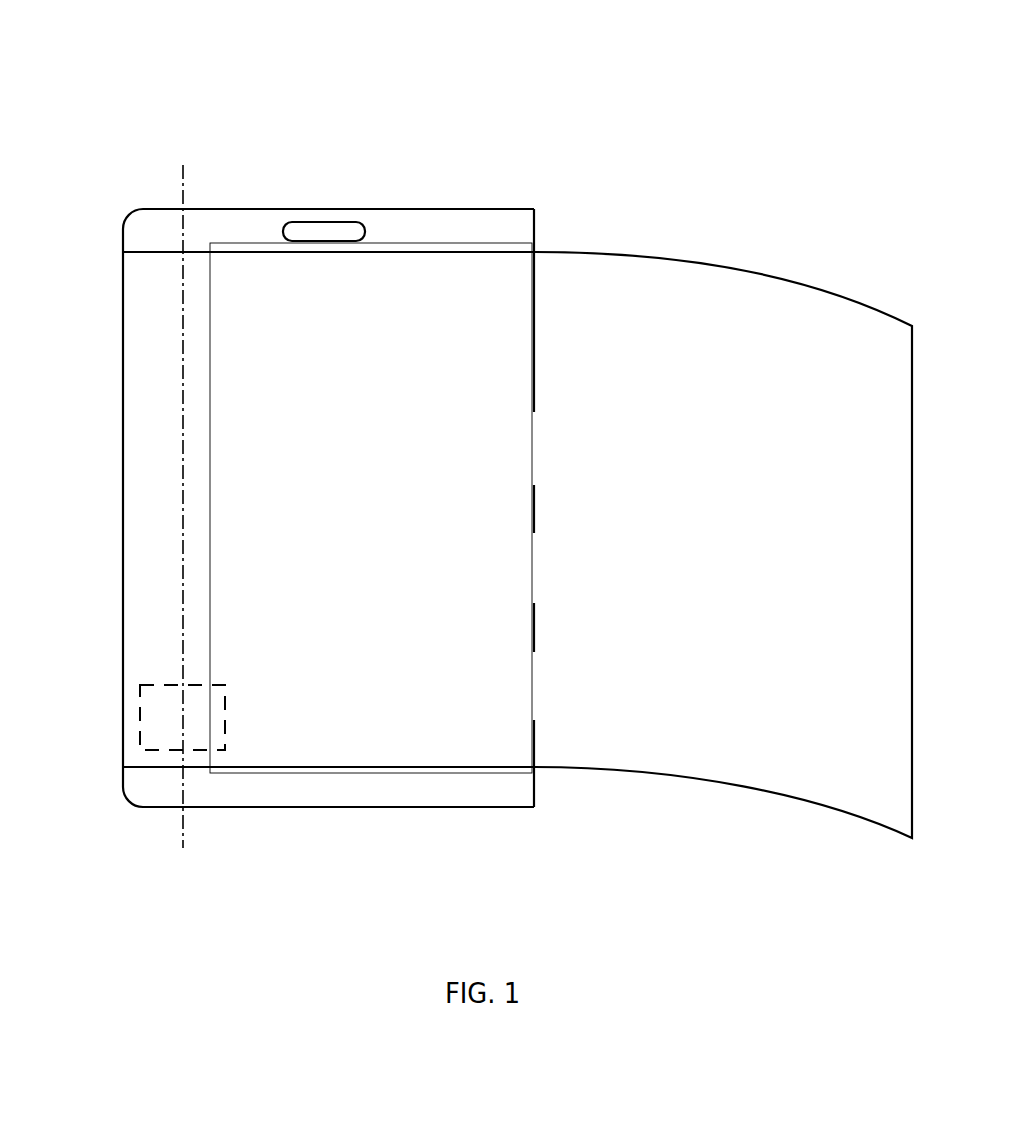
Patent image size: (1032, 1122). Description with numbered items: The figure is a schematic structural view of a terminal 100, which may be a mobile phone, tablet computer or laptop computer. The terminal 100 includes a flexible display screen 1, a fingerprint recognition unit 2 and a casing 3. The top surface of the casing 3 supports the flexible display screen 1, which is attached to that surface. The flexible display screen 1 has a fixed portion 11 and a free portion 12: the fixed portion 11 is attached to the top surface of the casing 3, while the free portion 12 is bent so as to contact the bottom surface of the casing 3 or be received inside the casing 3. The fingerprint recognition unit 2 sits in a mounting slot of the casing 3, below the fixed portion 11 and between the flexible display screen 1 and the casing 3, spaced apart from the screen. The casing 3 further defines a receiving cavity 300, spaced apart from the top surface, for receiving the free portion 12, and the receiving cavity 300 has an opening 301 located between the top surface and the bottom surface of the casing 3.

The terminal 100 is at (556, 92).
The flexible display screen 1 is at (517, 593).
The fixed portion 11 is at (425, 683).
The free portion 12 is at (745, 715).
The fingerprint recognition unit 2 is at (138, 715).
The casing 3 is at (158, 225).
The receiving cavity 300 is at (207, 438).
The opening 301 is at (535, 412).